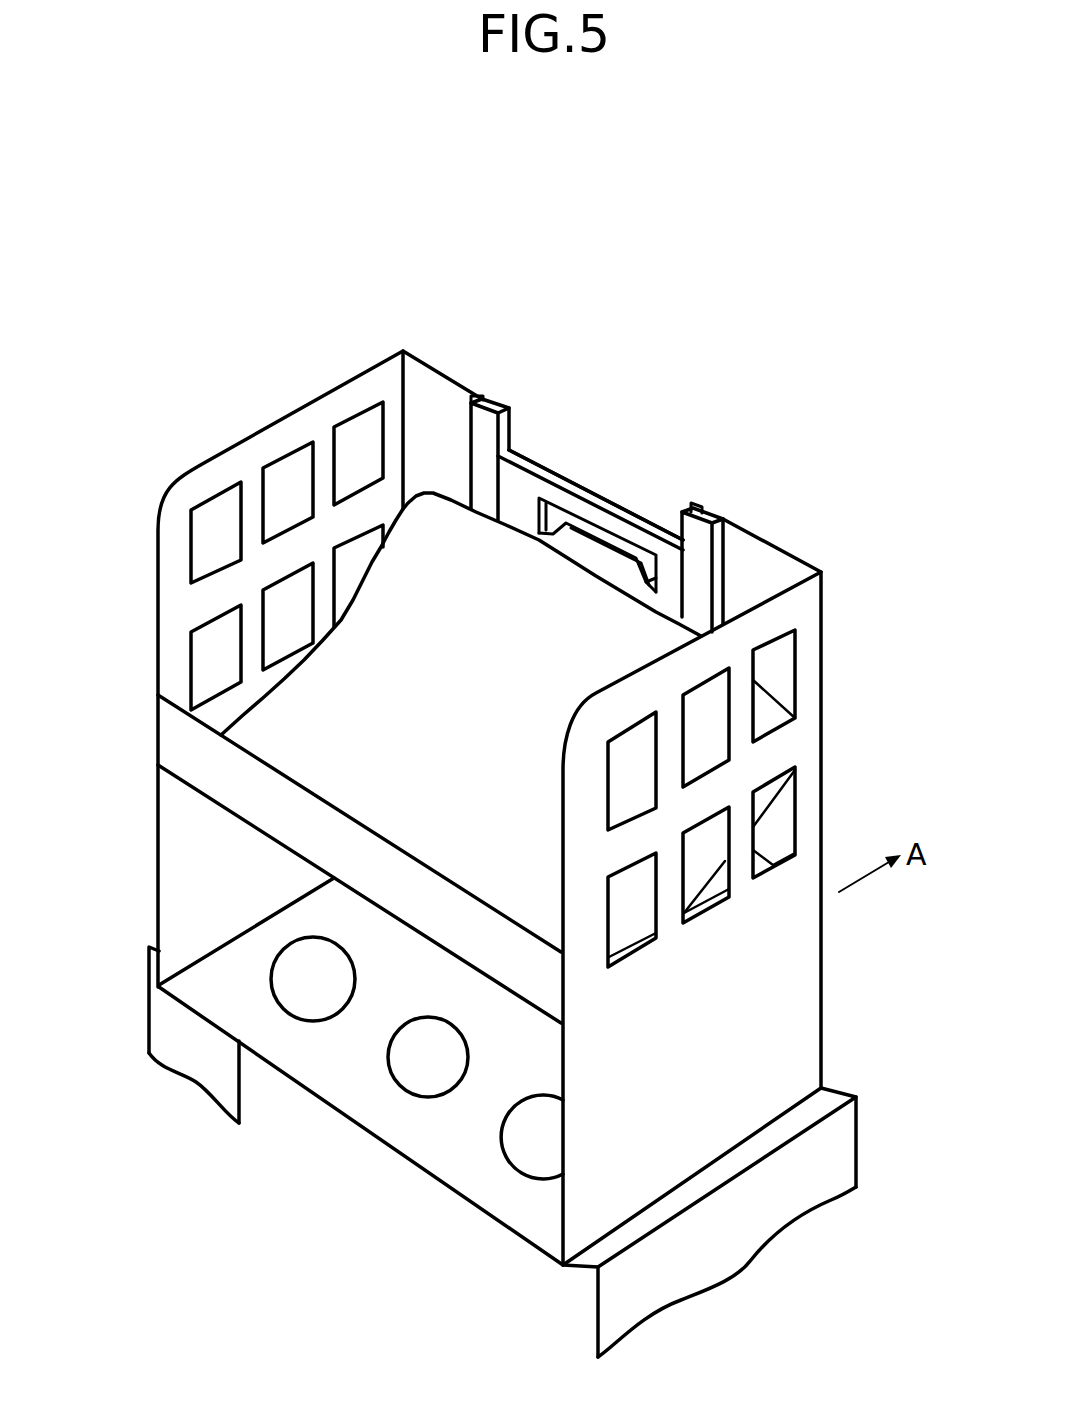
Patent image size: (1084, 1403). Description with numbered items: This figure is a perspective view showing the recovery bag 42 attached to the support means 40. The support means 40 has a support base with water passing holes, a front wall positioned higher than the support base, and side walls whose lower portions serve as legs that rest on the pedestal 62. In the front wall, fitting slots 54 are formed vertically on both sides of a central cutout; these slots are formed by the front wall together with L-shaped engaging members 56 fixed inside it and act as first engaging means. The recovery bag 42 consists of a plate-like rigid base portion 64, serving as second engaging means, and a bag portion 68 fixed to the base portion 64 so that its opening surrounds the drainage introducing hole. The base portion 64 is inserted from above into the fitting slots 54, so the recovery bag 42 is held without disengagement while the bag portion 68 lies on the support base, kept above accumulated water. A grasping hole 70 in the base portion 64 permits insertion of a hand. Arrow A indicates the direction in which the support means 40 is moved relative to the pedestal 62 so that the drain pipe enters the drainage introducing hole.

The support means 40 is at (376, 338).
The recovery bag 42 is at (608, 474).
The fitting slots 54 is at (480, 400).
The L-shaped engaging members 56 is at (482, 438).
The pedestal 62 is at (259, 1085).
The base portion 64 is at (523, 490).
The bag portion 68 is at (360, 737).
The grasping hole 70 is at (648, 565).